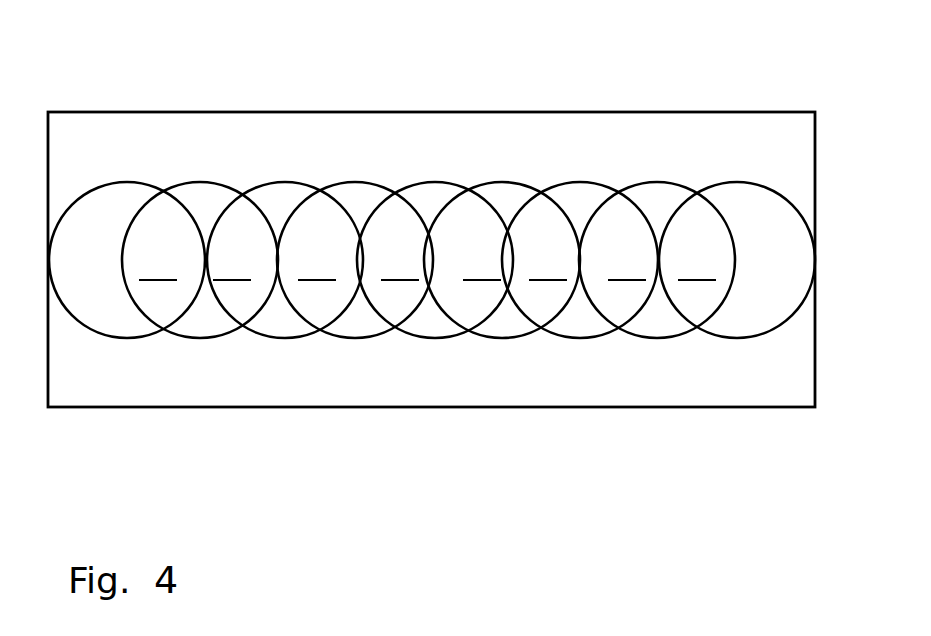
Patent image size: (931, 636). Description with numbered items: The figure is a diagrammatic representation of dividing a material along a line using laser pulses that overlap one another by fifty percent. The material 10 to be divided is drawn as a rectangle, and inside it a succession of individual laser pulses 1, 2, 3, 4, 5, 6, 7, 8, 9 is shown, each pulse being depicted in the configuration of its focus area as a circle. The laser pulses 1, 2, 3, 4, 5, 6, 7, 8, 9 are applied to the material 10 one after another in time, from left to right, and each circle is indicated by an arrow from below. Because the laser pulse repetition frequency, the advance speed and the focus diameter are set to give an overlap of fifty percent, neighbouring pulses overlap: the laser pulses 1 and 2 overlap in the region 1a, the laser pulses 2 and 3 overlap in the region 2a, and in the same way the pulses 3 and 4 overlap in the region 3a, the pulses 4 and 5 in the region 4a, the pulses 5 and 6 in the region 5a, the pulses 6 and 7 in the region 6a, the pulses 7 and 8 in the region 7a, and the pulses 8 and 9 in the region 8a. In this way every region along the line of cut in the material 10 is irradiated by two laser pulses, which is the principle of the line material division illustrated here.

The material 10 is at (550, 152).
The laser pulse 1 is at (120, 353).
The laser pulse 2 is at (193, 353).
The laser pulse 3 is at (280, 353).
The laser pulse 4 is at (352, 353).
The laser pulse 5 is at (437, 353).
The laser pulse 6 is at (503, 353).
The laser pulse 7 is at (583, 353).
The laser pulse 8 is at (650, 353).
The laser pulse 9 is at (747, 353).
The overlap region 1a is at (158, 262).
The overlap region 2a is at (232, 262).
The overlap region 3a is at (317, 262).
The overlap region 4a is at (400, 262).
The overlap region 5a is at (482, 262).
The overlap region 6a is at (548, 262).
The overlap region 7a is at (627, 262).
The overlap region 8a is at (697, 262).